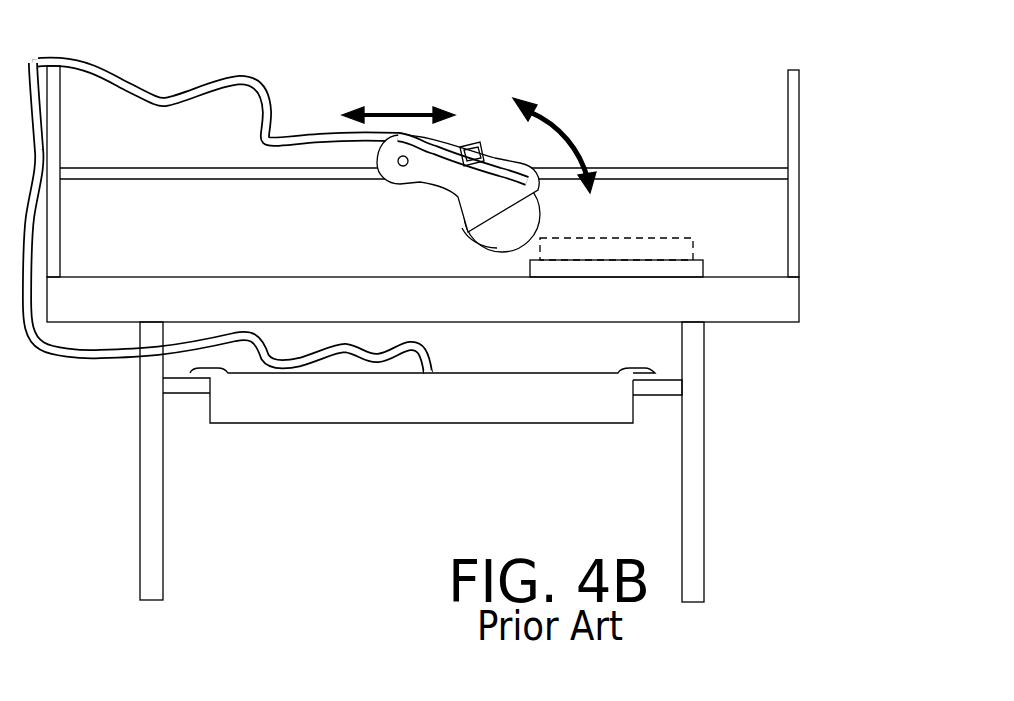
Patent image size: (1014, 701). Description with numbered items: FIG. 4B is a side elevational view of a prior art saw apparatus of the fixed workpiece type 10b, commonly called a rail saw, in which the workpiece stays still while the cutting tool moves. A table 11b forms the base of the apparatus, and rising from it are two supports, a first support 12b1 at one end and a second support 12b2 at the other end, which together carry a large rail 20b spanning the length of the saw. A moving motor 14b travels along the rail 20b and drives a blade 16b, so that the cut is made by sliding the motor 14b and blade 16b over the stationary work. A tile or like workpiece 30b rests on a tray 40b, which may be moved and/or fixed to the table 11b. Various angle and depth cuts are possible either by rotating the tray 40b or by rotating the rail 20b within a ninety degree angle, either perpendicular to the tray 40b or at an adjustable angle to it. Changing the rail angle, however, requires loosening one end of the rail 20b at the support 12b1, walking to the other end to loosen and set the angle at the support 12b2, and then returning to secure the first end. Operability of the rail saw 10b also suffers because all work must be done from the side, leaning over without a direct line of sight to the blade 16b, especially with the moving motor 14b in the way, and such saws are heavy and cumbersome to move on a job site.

The fixed workpiece type saw 10b is at (583, 65).
The table 11b is at (365, 276).
The support 12b1 is at (56, 193).
The support 12b2 is at (788, 200).
The moving motor 14b is at (395, 186).
The blade 16b is at (497, 244).
The rail 20b is at (188, 174).
The workpiece 30b is at (643, 242).
The tray 40b is at (702, 270).